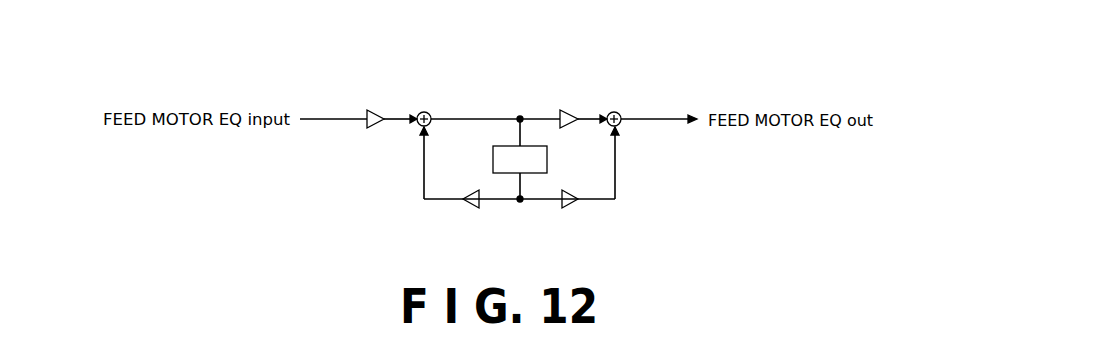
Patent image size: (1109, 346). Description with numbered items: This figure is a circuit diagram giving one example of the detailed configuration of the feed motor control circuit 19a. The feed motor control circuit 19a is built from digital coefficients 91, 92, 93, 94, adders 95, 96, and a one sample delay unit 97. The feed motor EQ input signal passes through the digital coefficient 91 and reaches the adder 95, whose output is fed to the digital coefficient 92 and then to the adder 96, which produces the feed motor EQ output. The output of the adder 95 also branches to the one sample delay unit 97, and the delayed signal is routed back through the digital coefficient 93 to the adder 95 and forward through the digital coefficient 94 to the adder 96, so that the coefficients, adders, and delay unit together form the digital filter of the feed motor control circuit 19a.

The feed motor control circuit 19a is at (398, 163).
The digital coefficient 91 is at (380, 108).
The digital coefficient 92 is at (572, 108).
The digital coefficient 93 is at (469, 208).
The digital coefficient 94 is at (569, 209).
The adder 95 is at (424, 108).
The adder 96 is at (615, 108).
The one sample delay unit 97 is at (493, 157).